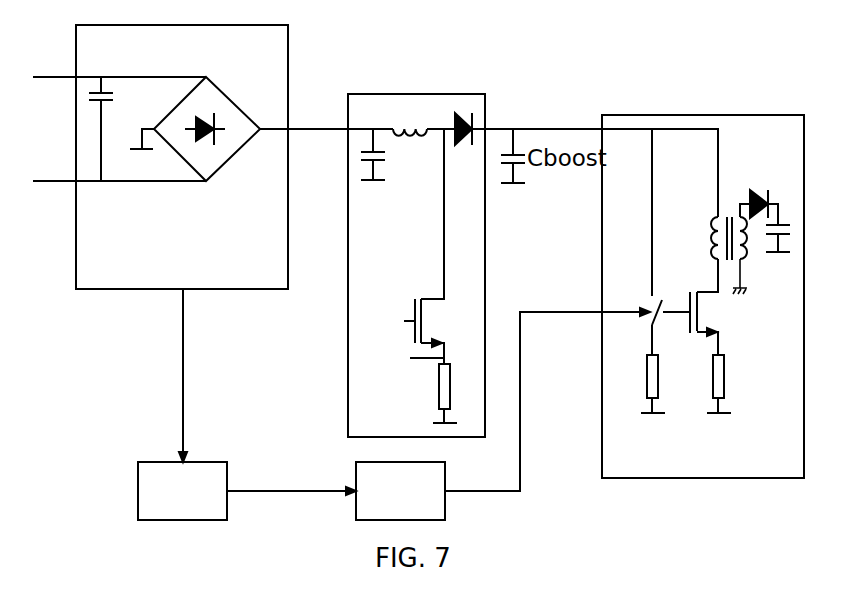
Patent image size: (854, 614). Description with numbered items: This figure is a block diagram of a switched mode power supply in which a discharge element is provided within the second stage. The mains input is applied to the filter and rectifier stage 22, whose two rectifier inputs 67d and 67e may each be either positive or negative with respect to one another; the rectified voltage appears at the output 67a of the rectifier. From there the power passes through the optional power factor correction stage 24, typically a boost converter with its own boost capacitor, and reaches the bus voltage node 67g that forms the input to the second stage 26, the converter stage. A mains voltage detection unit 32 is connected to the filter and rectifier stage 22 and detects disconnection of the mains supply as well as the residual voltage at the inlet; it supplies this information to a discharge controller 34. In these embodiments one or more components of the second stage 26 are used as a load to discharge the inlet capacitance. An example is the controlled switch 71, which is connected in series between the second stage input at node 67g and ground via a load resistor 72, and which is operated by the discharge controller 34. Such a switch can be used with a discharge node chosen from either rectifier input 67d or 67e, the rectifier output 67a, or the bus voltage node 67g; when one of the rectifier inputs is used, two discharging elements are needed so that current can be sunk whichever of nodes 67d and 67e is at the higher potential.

The filter and rectifier stage 22 is at (144, 277).
The power factor correction stage 24 is at (406, 422).
The second stage 26 is at (675, 296).
The mains voltage detection unit 32 is at (198, 506).
The discharge controller 34 is at (416, 506).
The output of the rectifier 67a is at (302, 129).
The input to the rectifier 67d is at (206, 77).
The input to the rectifier 67e is at (206, 181).
The bus voltage node 67g is at (543, 129).
The controlled switch 71 is at (649, 306).
The load resistor 72 is at (643, 377).